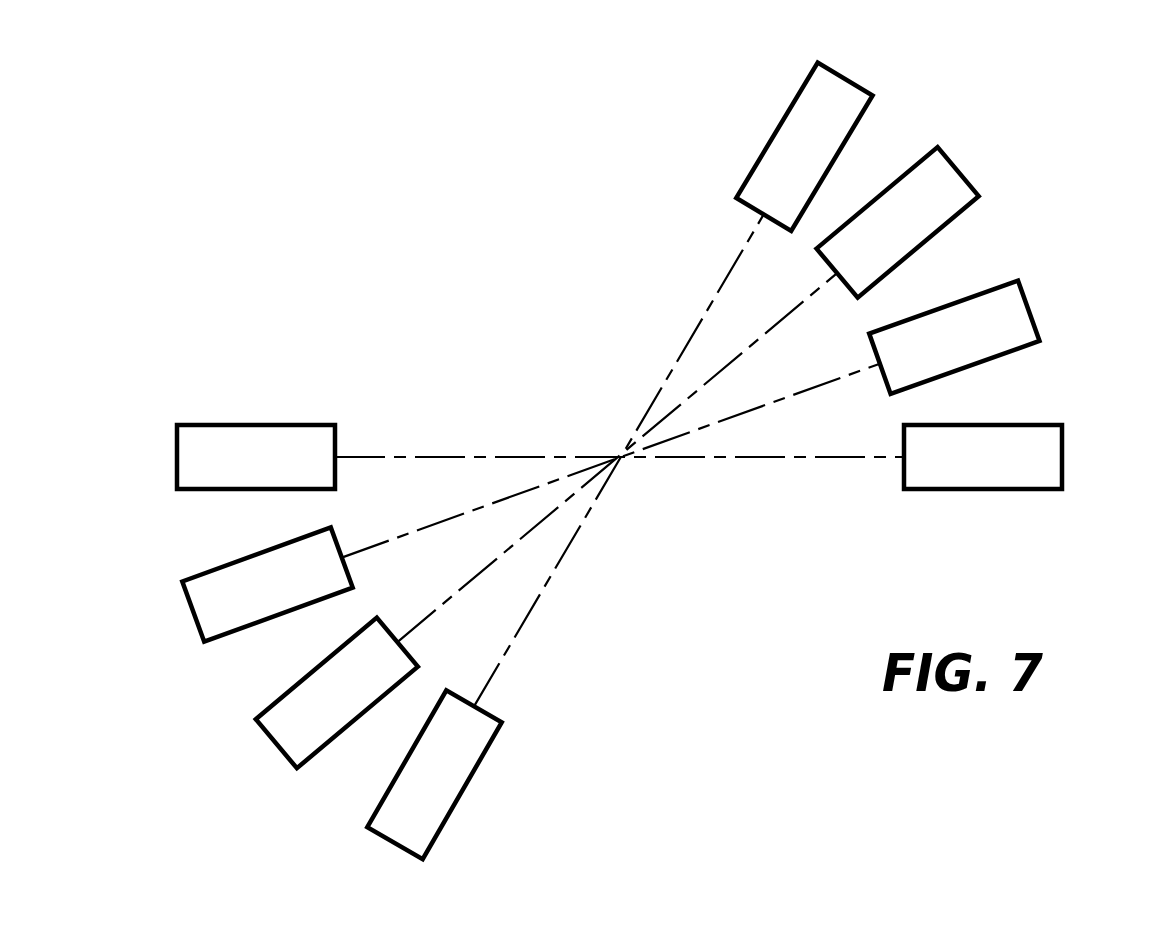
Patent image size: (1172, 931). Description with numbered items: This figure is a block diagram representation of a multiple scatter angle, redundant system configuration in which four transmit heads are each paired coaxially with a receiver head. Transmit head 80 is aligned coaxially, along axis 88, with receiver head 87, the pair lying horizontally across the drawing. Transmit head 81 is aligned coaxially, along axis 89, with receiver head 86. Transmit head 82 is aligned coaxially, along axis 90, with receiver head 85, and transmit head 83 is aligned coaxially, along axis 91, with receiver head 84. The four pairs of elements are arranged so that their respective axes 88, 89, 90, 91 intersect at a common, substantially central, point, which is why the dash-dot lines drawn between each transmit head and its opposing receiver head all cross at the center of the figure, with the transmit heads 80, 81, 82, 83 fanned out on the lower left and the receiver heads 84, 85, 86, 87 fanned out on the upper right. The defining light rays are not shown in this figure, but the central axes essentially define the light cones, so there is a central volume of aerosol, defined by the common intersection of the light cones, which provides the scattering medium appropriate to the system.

The transmit head 80 is at (250, 417).
The transmit head 81 is at (206, 654).
The transmit head 82 is at (271, 749).
The transmit head 83 is at (463, 803).
The receiver head 84 is at (847, 74).
The receiver head 85 is at (962, 158).
The receiver head 86 is at (1022, 283).
The receiver head 87 is at (1064, 426).
The axis 88 is at (517, 457).
The axis 89 is at (443, 517).
The axis 90 is at (457, 592).
The axis 91 is at (527, 615).